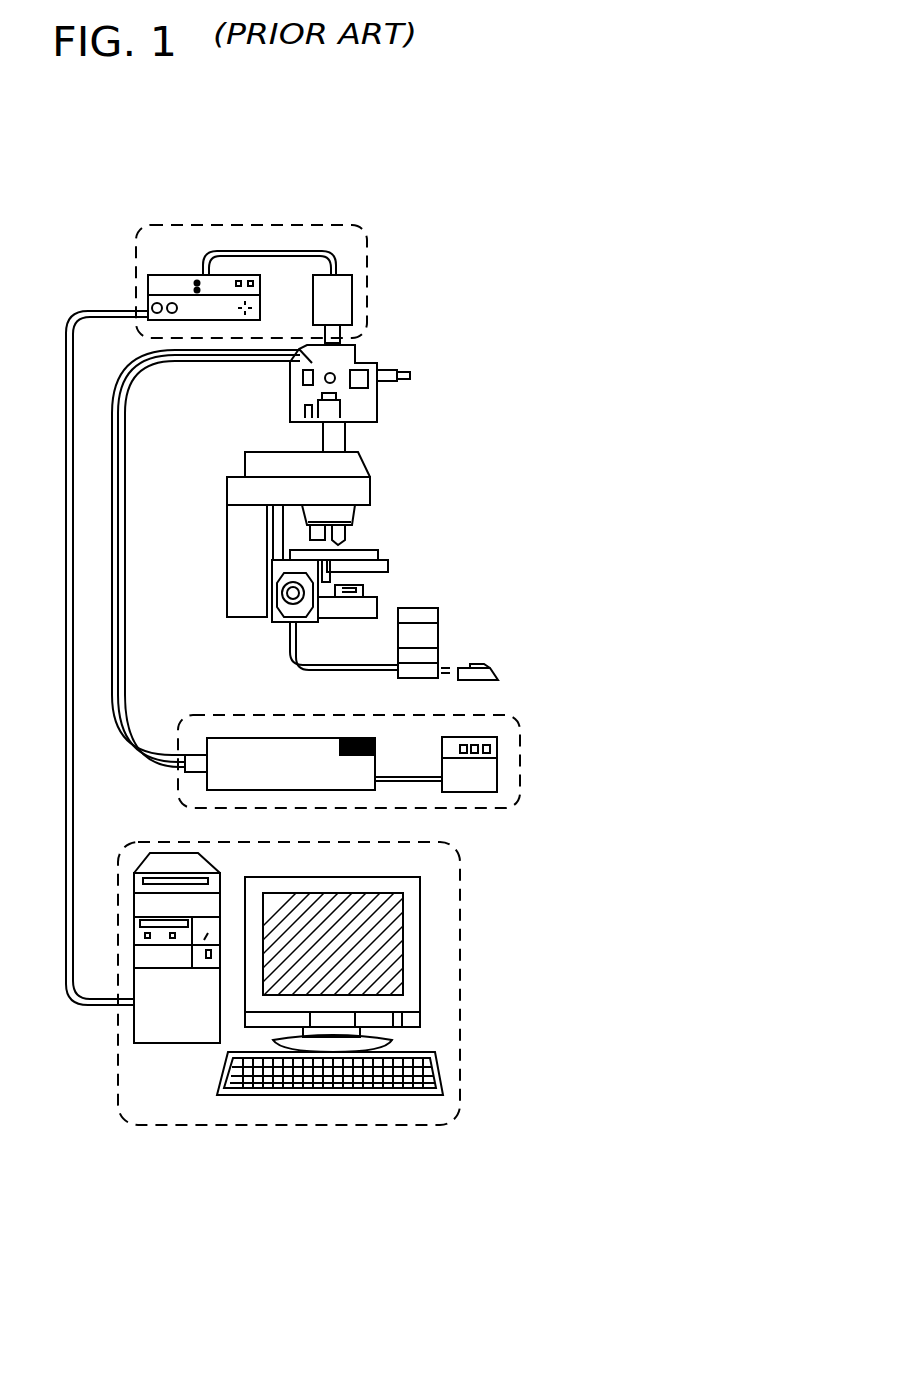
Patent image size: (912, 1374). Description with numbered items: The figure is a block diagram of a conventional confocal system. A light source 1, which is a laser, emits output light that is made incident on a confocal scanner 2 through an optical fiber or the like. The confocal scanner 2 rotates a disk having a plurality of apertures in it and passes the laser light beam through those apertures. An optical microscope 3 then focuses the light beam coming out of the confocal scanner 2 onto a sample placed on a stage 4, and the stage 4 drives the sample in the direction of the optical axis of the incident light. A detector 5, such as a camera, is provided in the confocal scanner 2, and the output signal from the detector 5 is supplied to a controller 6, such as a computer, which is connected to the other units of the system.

The light source 1 is at (503, 765).
The confocal scanner 2 is at (360, 373).
The optical microscope 3 is at (359, 493).
The stage 4 is at (418, 643).
The detector 5 is at (215, 228).
The controller 6 is at (282, 1110).